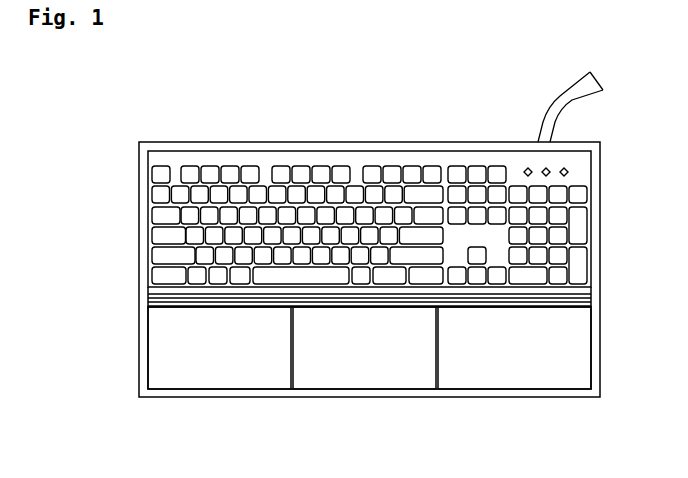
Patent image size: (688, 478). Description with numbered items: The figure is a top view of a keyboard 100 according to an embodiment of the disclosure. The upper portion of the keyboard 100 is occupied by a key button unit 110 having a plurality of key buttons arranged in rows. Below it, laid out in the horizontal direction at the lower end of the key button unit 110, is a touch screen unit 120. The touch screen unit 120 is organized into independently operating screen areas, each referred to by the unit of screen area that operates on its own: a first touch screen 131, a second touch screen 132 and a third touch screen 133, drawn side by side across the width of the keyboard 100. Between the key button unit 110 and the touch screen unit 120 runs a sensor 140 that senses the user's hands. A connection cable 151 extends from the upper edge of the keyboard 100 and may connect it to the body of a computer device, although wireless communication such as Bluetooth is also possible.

The keyboard 100 is at (115, 141).
The key button unit 110 is at (148, 224).
The touch screen unit 120 is at (328, 375).
The first touch screen 131 is at (513, 380).
The second touch screen 132 is at (367, 382).
The third touch screen 133 is at (228, 378).
The sensor 140 is at (148, 300).
The connection cable 151 is at (548, 113).